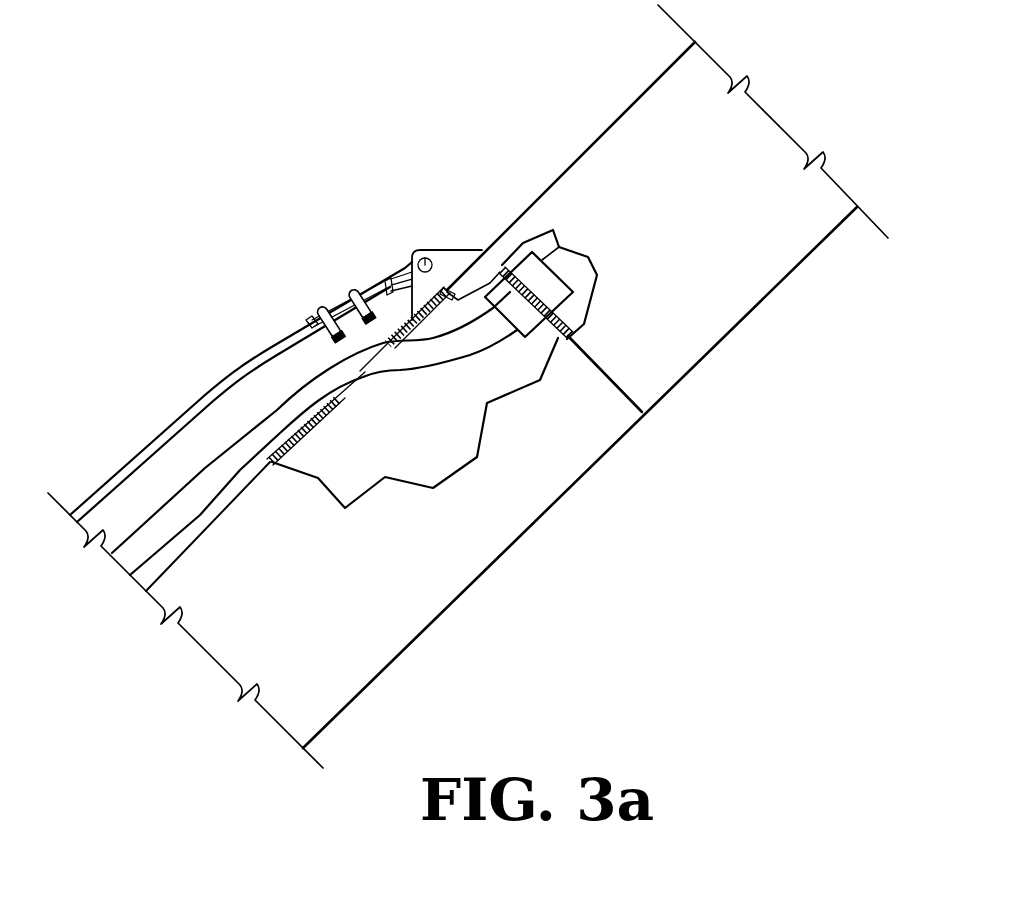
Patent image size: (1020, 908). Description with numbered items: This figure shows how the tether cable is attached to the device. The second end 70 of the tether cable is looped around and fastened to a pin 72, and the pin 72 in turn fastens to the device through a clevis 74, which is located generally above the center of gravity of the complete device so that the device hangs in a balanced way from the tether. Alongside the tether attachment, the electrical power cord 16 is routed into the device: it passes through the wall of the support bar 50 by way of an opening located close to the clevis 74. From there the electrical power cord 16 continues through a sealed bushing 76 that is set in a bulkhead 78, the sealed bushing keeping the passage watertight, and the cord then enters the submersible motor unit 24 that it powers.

The electrical power cord 16 is at (205, 468).
The submersible motor unit 24 is at (660, 402).
The support bar 50 is at (610, 448).
The second end 70 is at (255, 357).
The pin 72 is at (418, 248).
The clevis 74 is at (453, 250).
The sealed bushing 76 is at (573, 298).
The bulkhead 78 is at (558, 335).